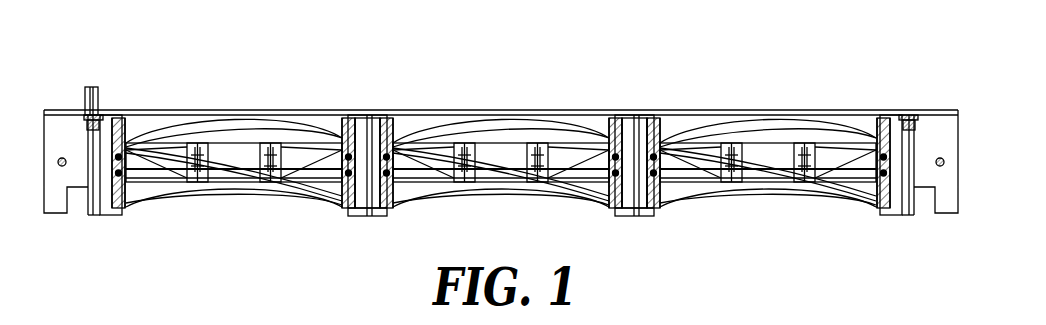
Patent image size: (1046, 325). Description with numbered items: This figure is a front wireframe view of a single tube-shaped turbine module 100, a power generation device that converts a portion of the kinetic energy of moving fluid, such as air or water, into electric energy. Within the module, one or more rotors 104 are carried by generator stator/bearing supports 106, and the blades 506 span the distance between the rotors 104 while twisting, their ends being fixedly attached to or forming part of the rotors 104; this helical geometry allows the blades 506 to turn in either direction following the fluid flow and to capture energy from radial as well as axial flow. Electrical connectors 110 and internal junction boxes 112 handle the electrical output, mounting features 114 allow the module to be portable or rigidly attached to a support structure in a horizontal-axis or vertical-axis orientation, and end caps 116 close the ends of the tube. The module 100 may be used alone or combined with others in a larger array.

The tube-shaped turbine module 100 is at (813, 68).
The rotor 104 is at (127, 190).
The generator stator/bearing support 106 is at (367, 214).
The electrical connector 110 is at (93, 197).
The internal junction box 112 is at (358, 118).
The mounting feature 114 is at (65, 167).
The end cap 116 is at (66, 118).
The blade 506 is at (280, 190).